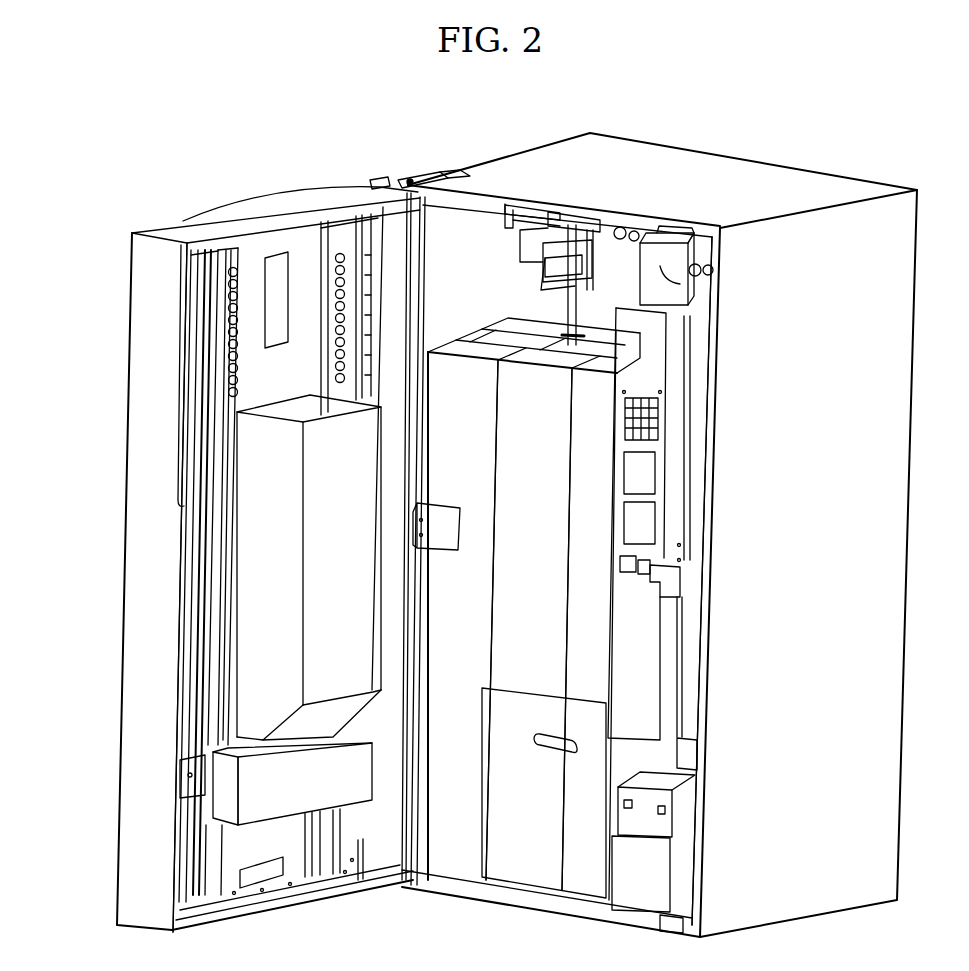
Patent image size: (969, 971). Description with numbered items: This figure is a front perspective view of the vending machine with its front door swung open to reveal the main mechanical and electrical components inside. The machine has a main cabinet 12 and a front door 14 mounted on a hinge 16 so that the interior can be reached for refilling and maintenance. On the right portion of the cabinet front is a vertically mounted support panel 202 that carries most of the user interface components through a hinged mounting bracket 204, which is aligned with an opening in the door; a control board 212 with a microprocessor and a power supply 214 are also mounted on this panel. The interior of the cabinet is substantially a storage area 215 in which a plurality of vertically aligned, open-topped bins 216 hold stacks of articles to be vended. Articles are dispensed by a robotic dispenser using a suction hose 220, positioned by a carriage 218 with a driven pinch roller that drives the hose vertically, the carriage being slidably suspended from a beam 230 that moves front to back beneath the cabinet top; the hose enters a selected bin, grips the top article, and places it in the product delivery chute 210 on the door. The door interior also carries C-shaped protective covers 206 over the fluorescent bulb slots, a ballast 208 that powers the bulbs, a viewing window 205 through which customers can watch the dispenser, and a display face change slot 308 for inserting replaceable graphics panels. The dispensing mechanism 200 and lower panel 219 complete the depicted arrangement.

The main cabinet 12 is at (692, 162).
The front door 14 is at (172, 232).
The hinge 16 is at (406, 176).
The product delivery mechanism 200 is at (524, 245).
The support panel 202 is at (697, 643).
The hinged mounting bracket 204 is at (717, 383).
The viewing window 205 is at (276, 258).
The protective covers 206 is at (222, 533).
The ballast 208 is at (226, 800).
The product delivery chute 210 is at (270, 617).
The control board 212 is at (716, 272).
The power supply 214 is at (683, 817).
The storage area 215 is at (519, 445).
The bins 216 is at (507, 320).
The carriage 218 is at (542, 255).
The lower panel 219 is at (520, 700).
The suction hose 220 is at (588, 300).
The beam 230 is at (522, 206).
The display face change slot 308 is at (179, 498).